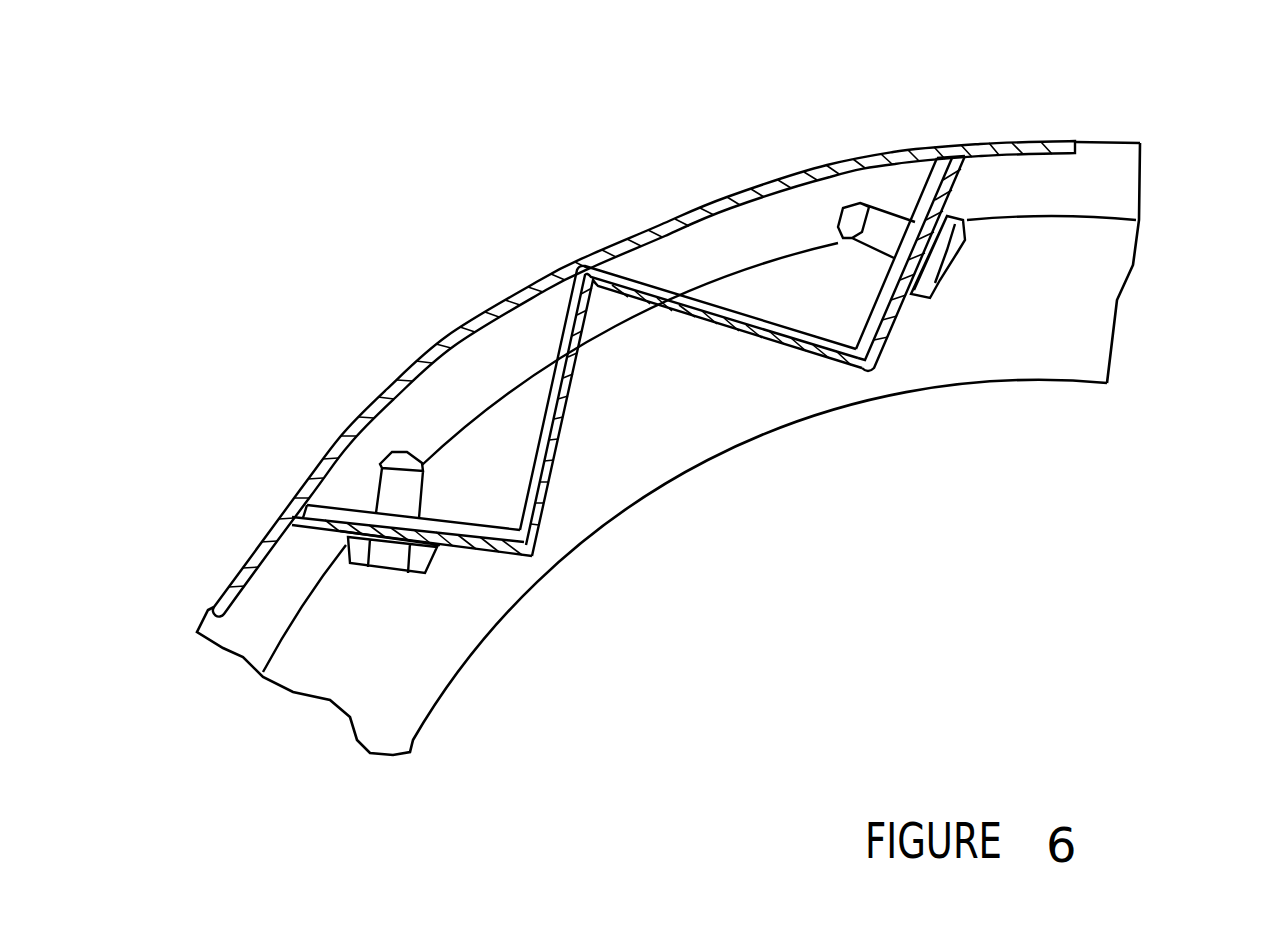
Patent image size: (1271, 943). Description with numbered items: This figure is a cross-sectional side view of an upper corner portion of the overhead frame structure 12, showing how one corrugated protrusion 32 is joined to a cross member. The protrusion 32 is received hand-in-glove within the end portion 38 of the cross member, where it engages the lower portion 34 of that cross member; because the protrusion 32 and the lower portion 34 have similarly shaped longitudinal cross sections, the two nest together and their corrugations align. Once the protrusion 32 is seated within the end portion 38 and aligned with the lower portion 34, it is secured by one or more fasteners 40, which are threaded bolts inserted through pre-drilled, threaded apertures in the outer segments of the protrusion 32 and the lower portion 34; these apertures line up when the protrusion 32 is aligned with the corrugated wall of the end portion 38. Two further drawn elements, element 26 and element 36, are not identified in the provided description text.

The overhead frame structure 12 is at (291, 240).
The rim 26 is at (687, 475).
The protrusion 32 is at (562, 322).
The lower portion 34 is at (843, 377).
The band 36 is at (663, 222).
The end portion 38 is at (1077, 144).
The fastener 40 is at (384, 448).